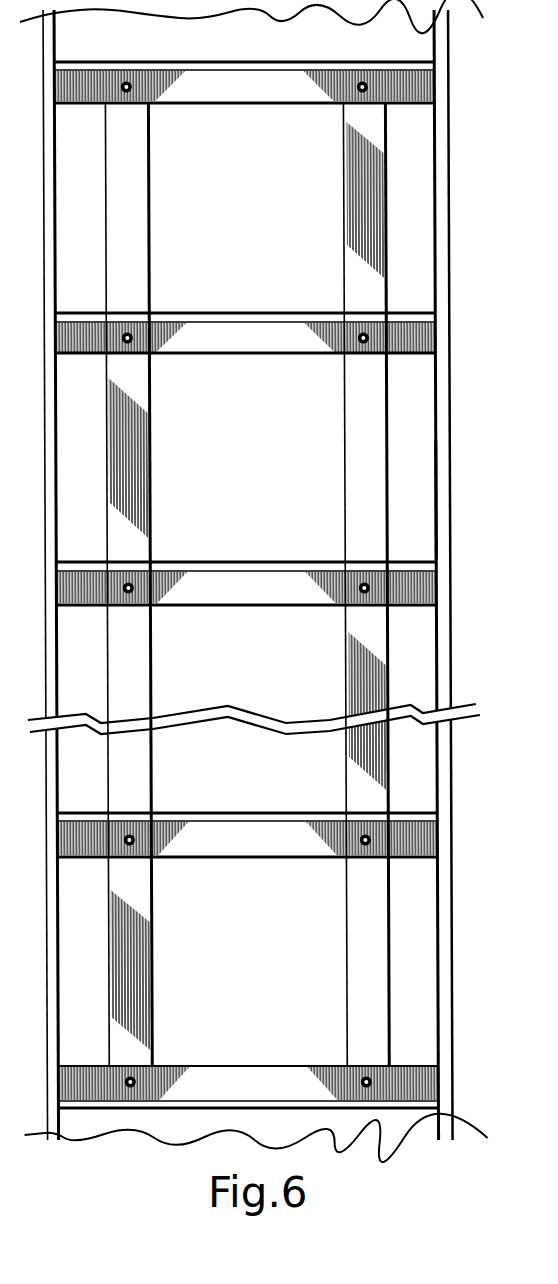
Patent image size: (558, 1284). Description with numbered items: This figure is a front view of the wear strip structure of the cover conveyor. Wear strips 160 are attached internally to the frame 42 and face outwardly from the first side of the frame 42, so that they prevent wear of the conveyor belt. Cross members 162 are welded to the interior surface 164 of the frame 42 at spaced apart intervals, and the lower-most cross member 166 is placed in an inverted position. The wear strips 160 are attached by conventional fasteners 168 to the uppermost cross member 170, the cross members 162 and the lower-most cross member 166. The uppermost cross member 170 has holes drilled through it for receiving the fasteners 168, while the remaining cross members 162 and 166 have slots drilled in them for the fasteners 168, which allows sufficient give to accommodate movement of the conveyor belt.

The frame 42 is at (450, 403).
The wear strips 160 is at (362, 196).
The cross members 162 is at (415, 590).
The interior surface 164 is at (440, 476).
The lower-most cross member 166 is at (420, 1083).
The fasteners 168 is at (361, 345).
The uppermost cross member 170 is at (418, 83).